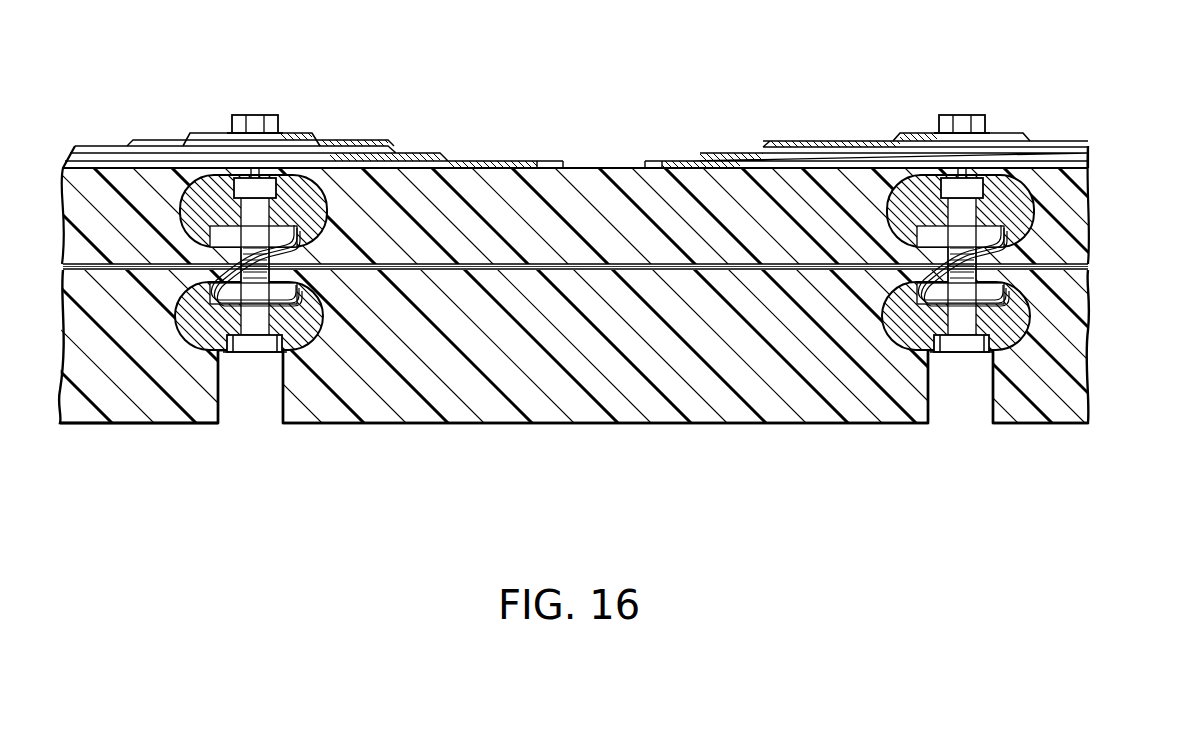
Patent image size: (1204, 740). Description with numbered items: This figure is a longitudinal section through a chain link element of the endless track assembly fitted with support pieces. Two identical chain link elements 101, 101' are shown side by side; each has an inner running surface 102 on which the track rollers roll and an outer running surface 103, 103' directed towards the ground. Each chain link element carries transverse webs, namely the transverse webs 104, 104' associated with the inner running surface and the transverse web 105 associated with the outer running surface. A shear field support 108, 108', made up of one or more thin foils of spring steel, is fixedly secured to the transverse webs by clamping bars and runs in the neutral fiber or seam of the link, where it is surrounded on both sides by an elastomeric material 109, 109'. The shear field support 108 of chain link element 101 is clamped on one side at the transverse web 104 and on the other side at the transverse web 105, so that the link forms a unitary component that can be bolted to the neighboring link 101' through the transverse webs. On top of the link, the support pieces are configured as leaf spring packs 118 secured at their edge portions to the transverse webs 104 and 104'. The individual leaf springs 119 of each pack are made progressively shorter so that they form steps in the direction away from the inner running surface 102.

The chain link element 101 is at (630, 125).
The chain link element 101' is at (1144, 187).
The inner running surface 102 is at (592, 168).
The outer running surface 103 is at (602, 375).
The outer running surface 103' is at (139, 453).
The transverse web 104 is at (974, 251).
The transverse web 104' is at (248, 221).
The transverse web 105 is at (283, 356).
The shear field support 108 is at (575, 298).
The shear field support 108' is at (619, 278).
The elastomeric material 109 is at (605, 453).
The elastomeric material 109' is at (625, 435).
The leaf spring pack 118 is at (326, 132).
The leaf spring 119 is at (388, 152).